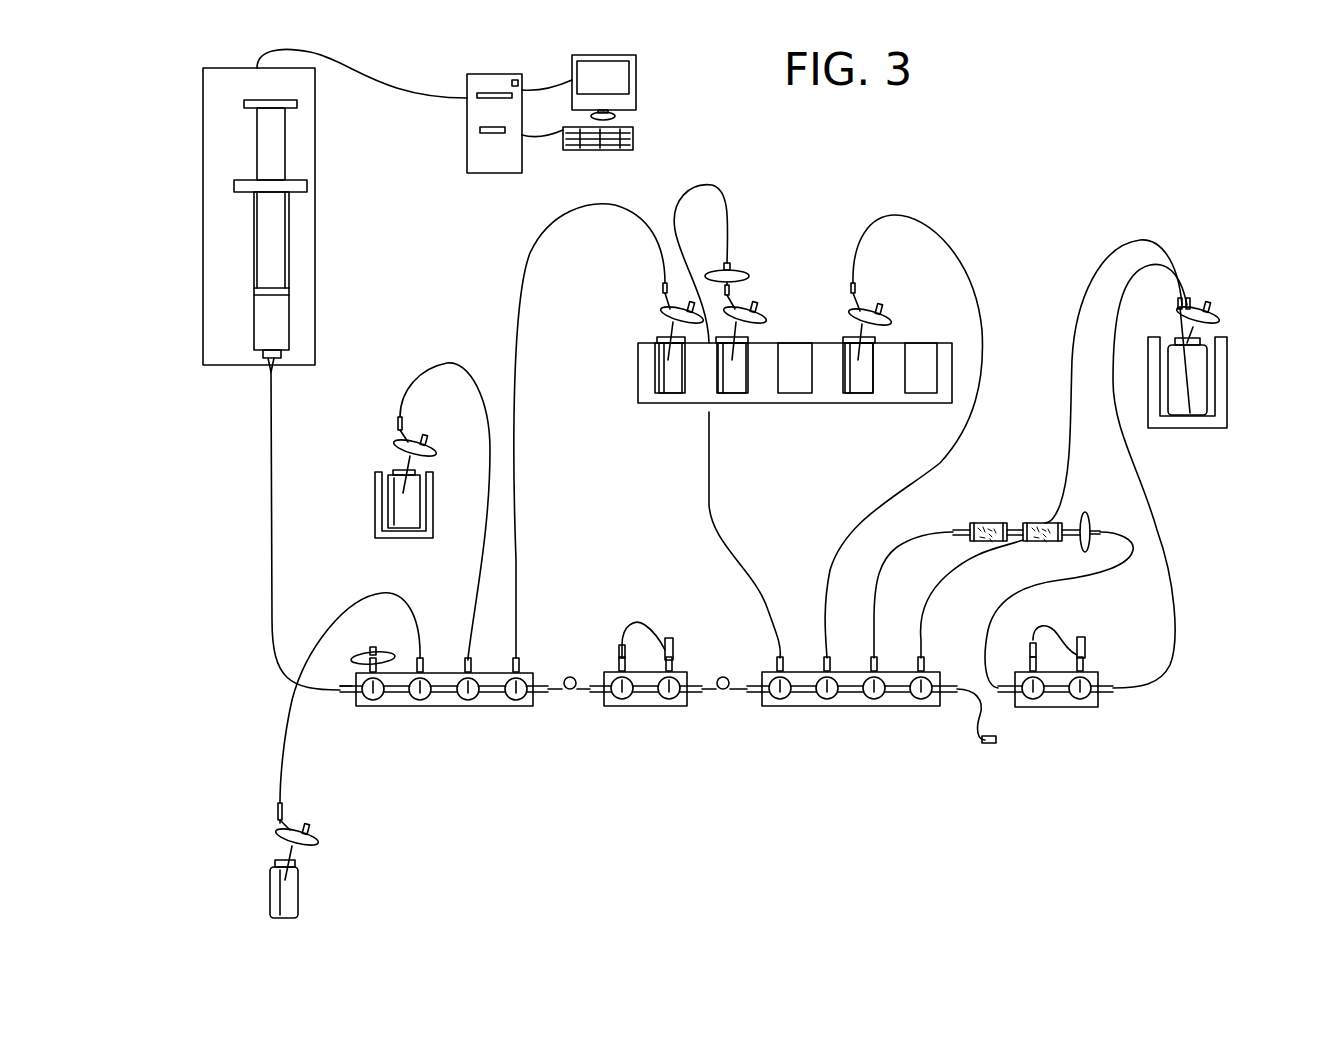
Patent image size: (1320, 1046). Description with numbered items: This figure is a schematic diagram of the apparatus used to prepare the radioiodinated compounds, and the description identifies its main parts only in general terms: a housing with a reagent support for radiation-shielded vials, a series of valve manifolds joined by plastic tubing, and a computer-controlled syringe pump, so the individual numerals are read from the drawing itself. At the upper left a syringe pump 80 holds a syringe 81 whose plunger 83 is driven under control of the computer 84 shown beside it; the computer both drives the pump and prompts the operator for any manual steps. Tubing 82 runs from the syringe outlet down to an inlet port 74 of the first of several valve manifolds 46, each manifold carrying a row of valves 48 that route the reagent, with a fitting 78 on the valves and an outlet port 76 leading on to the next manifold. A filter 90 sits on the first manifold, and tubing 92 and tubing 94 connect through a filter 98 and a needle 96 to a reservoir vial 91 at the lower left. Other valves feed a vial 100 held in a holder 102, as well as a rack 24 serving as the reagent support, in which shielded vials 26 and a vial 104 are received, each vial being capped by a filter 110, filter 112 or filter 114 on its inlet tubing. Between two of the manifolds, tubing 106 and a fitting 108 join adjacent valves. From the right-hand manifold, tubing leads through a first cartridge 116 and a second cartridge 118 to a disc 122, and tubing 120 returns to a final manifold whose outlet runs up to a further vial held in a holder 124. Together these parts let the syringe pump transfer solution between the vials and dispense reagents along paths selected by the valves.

The vial rack 24 is at (637, 393).
The sample vial with filter 26 is at (657, 352).
The valve manifold 46 is at (747, 726).
The valve 48 is at (387, 700).
The inlet port 74 is at (352, 692).
The outlet port 76 is at (537, 672).
The valve fitting 78 is at (463, 663).
The syringe pump 80 is at (317, 152).
The syringe barrel 81 is at (292, 250).
The tubing 82 is at (272, 540).
The syringe plunger 83 is at (285, 130).
The computer 84 is at (577, 178).
The filter 90 is at (387, 648).
The reservoir bottle 91 is at (300, 897).
The tubing 92 is at (383, 590).
The tubing 94 is at (277, 847).
The needle 96 is at (297, 873).
The filter 98 is at (310, 837).
The vial 100 is at (395, 475).
The vial holder 102 is at (428, 520).
The vial 104 is at (657, 380).
The tubing 106 is at (652, 648).
The sensor 108 is at (675, 638).
The filter 110 is at (748, 352).
The filter 112 is at (742, 270).
The filter 114 is at (868, 350).
The filter cartridge 116 is at (970, 523).
The filter cartridge 118 is at (978, 543).
The tubing 120 is at (1043, 543).
The frit 122 is at (1085, 517).
The vial holder 124 is at (1205, 332).